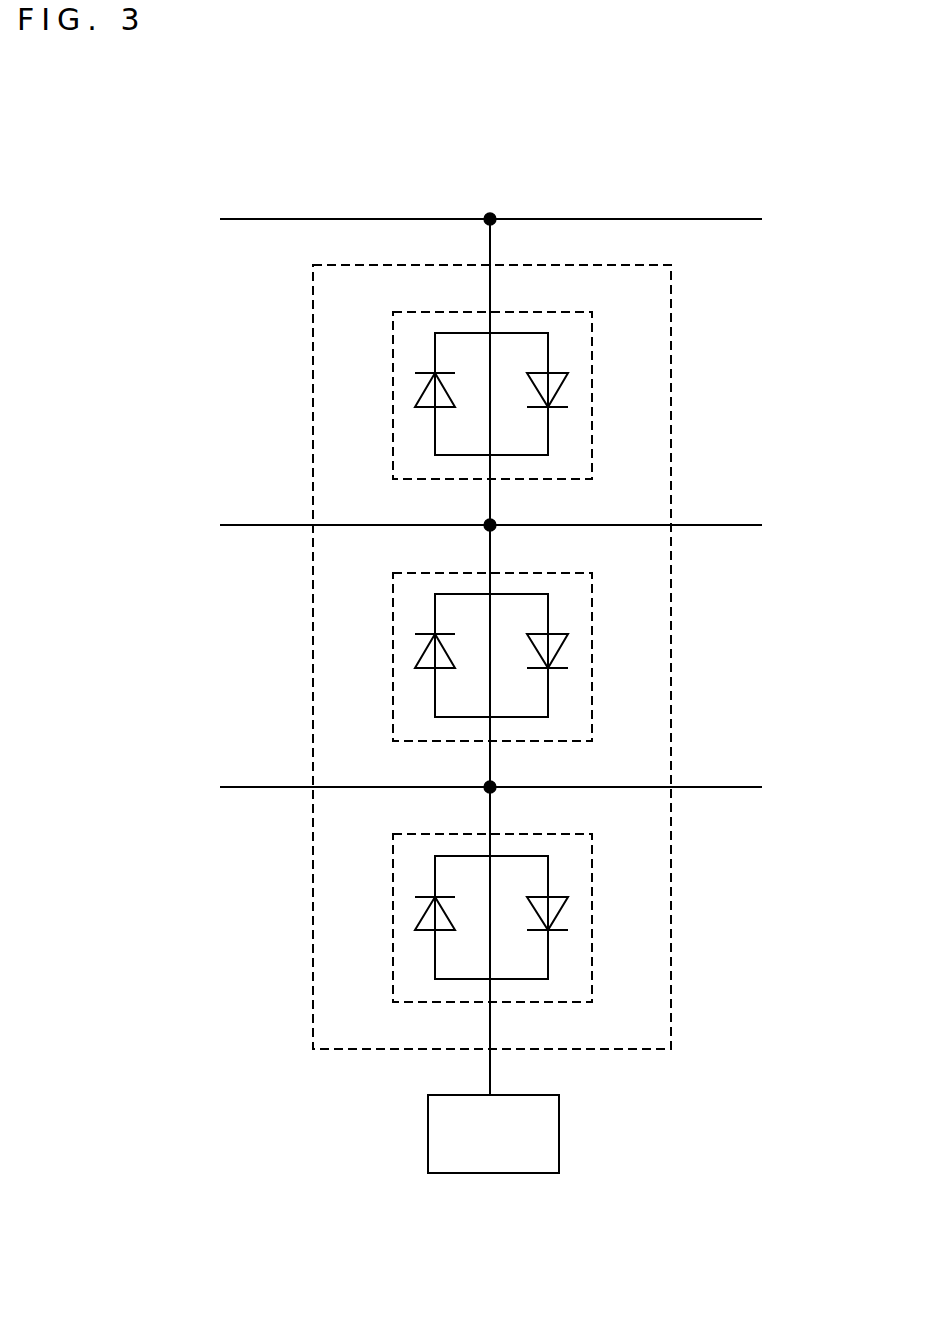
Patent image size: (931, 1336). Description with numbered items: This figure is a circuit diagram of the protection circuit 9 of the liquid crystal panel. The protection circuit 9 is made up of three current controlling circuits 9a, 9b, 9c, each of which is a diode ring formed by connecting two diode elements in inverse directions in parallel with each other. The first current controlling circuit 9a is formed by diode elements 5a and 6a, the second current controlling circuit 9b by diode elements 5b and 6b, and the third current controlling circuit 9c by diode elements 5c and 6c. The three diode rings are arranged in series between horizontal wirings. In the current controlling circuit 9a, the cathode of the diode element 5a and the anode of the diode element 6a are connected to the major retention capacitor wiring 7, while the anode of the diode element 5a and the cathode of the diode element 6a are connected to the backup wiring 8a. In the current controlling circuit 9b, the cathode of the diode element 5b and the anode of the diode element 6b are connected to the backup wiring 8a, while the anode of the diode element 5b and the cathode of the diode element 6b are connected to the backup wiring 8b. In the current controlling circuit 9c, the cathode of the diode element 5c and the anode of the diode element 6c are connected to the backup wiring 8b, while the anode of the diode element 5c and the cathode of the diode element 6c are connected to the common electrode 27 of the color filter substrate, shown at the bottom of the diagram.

The major retention capacitor wiring 7 is at (268, 219).
The backup wiring 8a is at (268, 525).
The backup wiring 8b is at (268, 787).
The protection circuit 9 is at (671, 338).
The current controlling circuit 9a is at (523, 395).
The current controlling circuit 9b is at (525, 657).
The current controlling circuit 9c is at (524, 918).
The diode element 5a is at (450, 407).
The diode element 5b is at (450, 668).
The diode element 5c is at (450, 930).
The diode element 6a is at (538, 372).
The diode element 6b is at (538, 633).
The diode element 6c is at (538, 896).
The common electrode 27 is at (559, 1137).